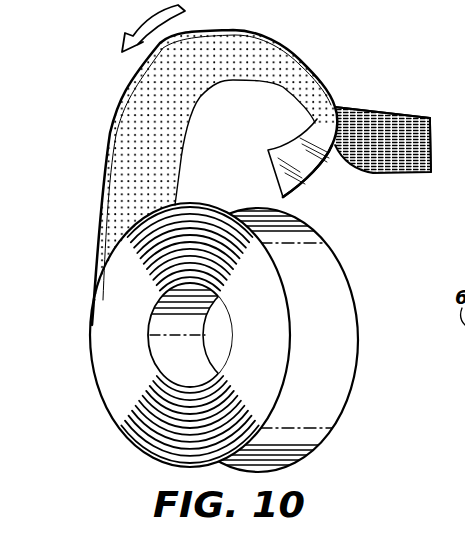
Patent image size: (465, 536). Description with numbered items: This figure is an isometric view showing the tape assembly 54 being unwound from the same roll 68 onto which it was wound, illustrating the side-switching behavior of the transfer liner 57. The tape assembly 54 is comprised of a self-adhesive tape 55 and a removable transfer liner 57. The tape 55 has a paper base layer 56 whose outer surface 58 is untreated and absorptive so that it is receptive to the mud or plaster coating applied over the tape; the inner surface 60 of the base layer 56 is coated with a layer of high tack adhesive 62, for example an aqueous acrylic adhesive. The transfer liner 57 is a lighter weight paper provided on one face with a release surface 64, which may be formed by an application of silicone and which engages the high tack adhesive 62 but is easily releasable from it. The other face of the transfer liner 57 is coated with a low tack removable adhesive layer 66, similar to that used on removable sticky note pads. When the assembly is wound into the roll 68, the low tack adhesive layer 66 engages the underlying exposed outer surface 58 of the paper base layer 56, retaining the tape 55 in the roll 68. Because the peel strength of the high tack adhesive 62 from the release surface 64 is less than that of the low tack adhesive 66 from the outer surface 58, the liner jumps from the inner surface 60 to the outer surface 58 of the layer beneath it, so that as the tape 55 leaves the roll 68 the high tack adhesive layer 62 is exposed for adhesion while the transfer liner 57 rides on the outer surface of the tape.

The tape assembly 54 is at (245, 177).
The self-adhesive tape 55 is at (367, 117).
The paper base layer 56 is at (390, 141).
The transfer liner 57 is at (308, 185).
The outer surface 58 is at (222, 337).
The inner surface 60 is at (383, 157).
The high tack adhesive layer 62 is at (413, 118).
The release surface 64 is at (295, 170).
The low tack removable adhesive layer 66 is at (148, 132).
The roll 68 is at (66, 340).